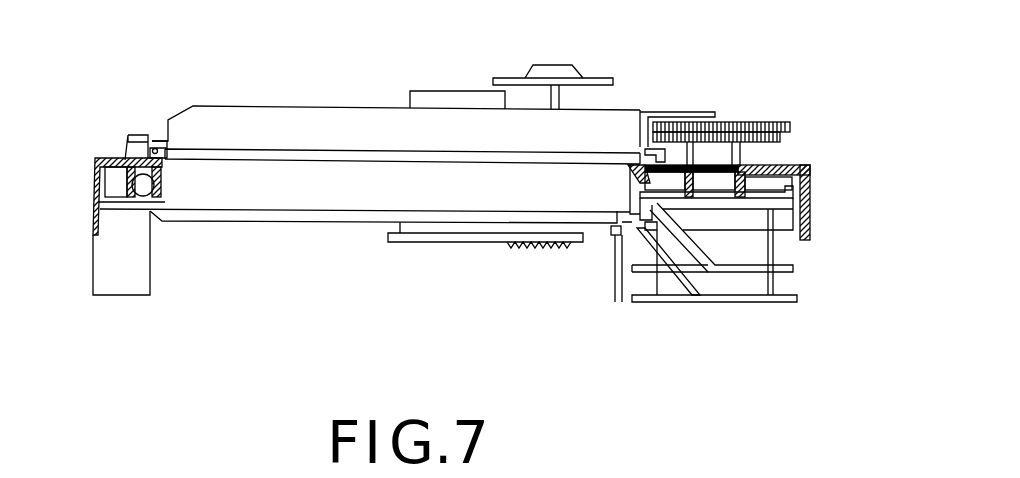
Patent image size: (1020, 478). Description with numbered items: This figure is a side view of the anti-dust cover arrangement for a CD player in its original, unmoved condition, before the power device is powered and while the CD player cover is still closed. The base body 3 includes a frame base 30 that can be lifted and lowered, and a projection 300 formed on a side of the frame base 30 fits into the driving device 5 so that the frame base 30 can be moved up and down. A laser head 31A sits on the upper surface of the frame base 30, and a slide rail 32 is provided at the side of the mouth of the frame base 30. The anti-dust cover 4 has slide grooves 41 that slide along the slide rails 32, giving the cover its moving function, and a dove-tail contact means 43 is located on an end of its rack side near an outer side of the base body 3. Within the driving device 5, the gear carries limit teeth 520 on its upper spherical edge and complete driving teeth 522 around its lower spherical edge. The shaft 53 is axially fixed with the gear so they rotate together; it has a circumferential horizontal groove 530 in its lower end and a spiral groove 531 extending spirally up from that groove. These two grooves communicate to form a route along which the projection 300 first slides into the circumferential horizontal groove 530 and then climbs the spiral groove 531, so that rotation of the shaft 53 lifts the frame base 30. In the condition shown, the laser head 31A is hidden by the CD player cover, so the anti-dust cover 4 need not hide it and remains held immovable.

The base body 3 is at (242, 173).
The anti-dust cover 4 is at (322, 120).
The driving device 5 is at (754, 100).
The frame base 30 is at (612, 232).
The laser head 31A is at (457, 98).
The slide rail 32 is at (155, 148).
The slide groove 41 is at (146, 147).
The dove-tail contact means 43 is at (646, 125).
The shaft 53 is at (787, 248).
The projection 300 is at (613, 236).
The limit teeth 520 is at (792, 125).
The driving teeth 522 is at (782, 140).
The circumferential horizontal groove 530 is at (753, 283).
The spiral groove 531 is at (698, 263).